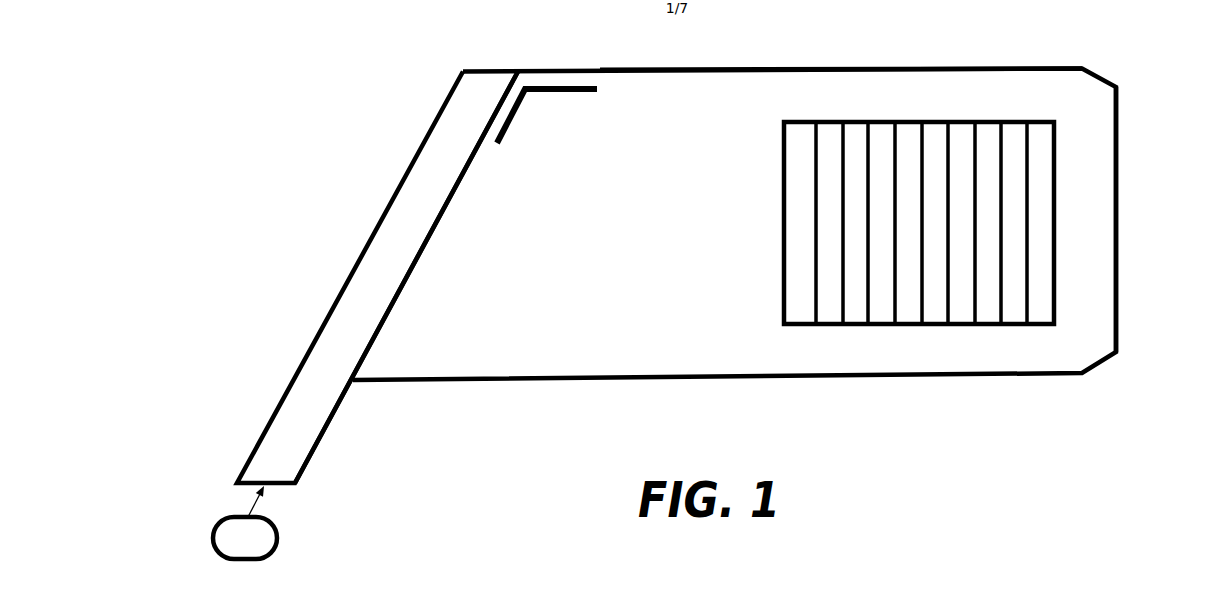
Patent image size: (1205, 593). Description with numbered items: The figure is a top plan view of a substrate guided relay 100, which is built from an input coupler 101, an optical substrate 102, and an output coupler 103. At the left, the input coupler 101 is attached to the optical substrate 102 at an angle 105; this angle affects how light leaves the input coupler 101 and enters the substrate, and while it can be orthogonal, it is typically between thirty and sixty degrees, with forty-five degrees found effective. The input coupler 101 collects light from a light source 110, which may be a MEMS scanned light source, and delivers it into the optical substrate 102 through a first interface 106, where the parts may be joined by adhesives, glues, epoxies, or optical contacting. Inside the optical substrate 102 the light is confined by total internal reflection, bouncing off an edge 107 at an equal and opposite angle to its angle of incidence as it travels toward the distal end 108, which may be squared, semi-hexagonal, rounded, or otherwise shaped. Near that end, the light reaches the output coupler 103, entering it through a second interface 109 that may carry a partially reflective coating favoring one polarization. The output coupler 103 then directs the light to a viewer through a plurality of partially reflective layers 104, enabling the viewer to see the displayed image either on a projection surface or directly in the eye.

The substrate guided relay 100 is at (312, 191).
The input coupler 101 is at (348, 322).
The optical substrate 102 is at (598, 327).
The output coupler 103 is at (933, 324).
The partially reflective layers 104 is at (867, 213).
The angle 105 is at (512, 123).
The first interface 106 is at (420, 262).
The edge 107 is at (732, 70).
The distal end 108 is at (1116, 233).
The second interface 109 is at (778, 284).
The light source 110 is at (262, 535).